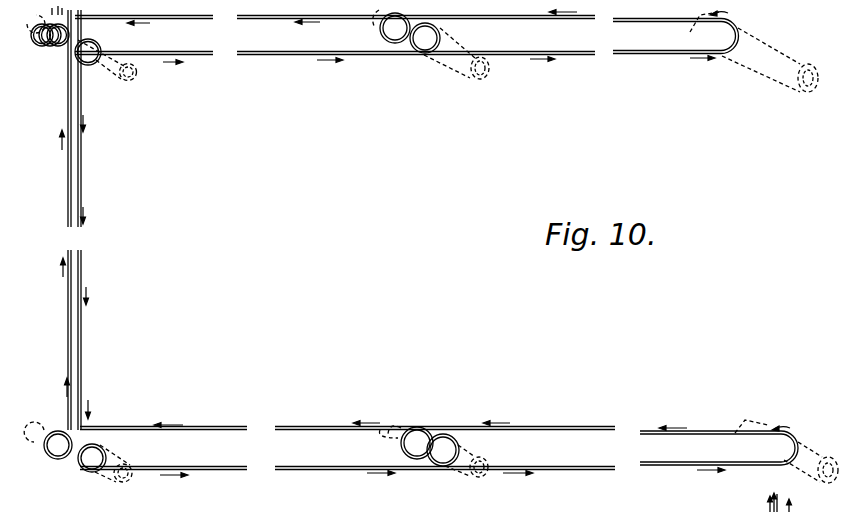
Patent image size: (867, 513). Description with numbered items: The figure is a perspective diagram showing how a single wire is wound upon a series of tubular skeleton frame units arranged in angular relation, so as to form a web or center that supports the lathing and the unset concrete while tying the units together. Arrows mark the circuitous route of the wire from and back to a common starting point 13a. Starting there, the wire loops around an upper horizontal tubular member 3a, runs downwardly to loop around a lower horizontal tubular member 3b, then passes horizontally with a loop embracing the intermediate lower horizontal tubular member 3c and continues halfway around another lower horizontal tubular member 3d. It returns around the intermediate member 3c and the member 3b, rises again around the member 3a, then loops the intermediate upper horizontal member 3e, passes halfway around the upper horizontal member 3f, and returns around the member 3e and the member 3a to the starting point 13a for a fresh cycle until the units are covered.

The starting point 13a is at (54, 56).
The upper horizontal tubular member 3a is at (89, 60).
The lower horizontal tubular member 3b is at (82, 466).
The intermediate lower horizontal tubular member 3c is at (436, 465).
The lower horizontal tubular member 3d is at (830, 453).
The intermediate upper horizontal member 3e is at (435, 59).
The upper horizontal member 3f is at (763, 77).